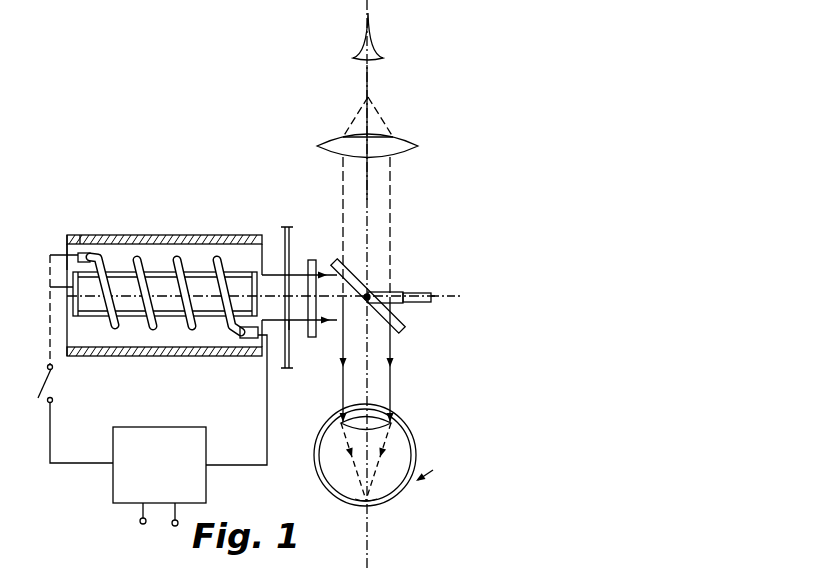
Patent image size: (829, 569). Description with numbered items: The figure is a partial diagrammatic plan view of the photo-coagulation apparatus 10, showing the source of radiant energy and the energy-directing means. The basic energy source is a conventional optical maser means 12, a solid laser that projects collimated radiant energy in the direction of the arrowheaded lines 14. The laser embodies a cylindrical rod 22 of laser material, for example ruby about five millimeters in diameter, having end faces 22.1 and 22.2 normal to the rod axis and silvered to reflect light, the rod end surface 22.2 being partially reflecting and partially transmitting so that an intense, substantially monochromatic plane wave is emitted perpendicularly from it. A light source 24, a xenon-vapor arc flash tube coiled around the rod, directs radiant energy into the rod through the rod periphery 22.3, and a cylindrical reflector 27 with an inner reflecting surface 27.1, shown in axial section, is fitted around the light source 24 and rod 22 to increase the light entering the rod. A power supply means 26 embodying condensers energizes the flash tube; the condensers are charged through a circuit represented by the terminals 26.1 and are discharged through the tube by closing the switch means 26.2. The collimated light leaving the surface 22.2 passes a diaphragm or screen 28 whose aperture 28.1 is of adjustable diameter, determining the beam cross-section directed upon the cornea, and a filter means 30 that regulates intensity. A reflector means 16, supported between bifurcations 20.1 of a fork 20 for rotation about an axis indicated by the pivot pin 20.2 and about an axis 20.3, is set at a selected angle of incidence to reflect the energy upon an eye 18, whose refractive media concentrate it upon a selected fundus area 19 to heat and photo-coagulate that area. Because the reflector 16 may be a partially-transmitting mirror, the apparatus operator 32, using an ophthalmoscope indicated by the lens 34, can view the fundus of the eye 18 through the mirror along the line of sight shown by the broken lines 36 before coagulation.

The laser surgical apparatus 10 is at (487, 197).
The optical maser means 12 is at (173, 235).
The arrowheaded lines 14 is at (295, 274).
The reflector means 16 is at (405, 327).
The eye 18 is at (412, 442).
The fundus area 19 is at (370, 500).
The fork 20 is at (418, 291).
The bifurcations 20.1 is at (390, 292).
The pivot pin 20.2 is at (369, 293).
The axis 20.3 is at (449, 300).
The cylindrical rod 22 is at (98, 318).
The end face 22.1 is at (50, 284).
The rod end surface 22.2 is at (258, 290).
The rod periphery 22.3 is at (113, 270).
The light source 24 is at (91, 252).
The power supply means 26 is at (116, 478).
The terminals 26.1 is at (172, 526).
The switch means 26.2 is at (42, 388).
The cylindrical reflector 27 is at (67, 236).
The inner reflecting surface 27.1 is at (82, 240).
The diaphragm or screen 28 is at (285, 227).
The aperture 28.1 is at (291, 323).
The filter means 30 is at (313, 260).
The apparatus operator 32 is at (381, 42).
The lens 34 is at (402, 145).
The broken lines 36 is at (392, 178).